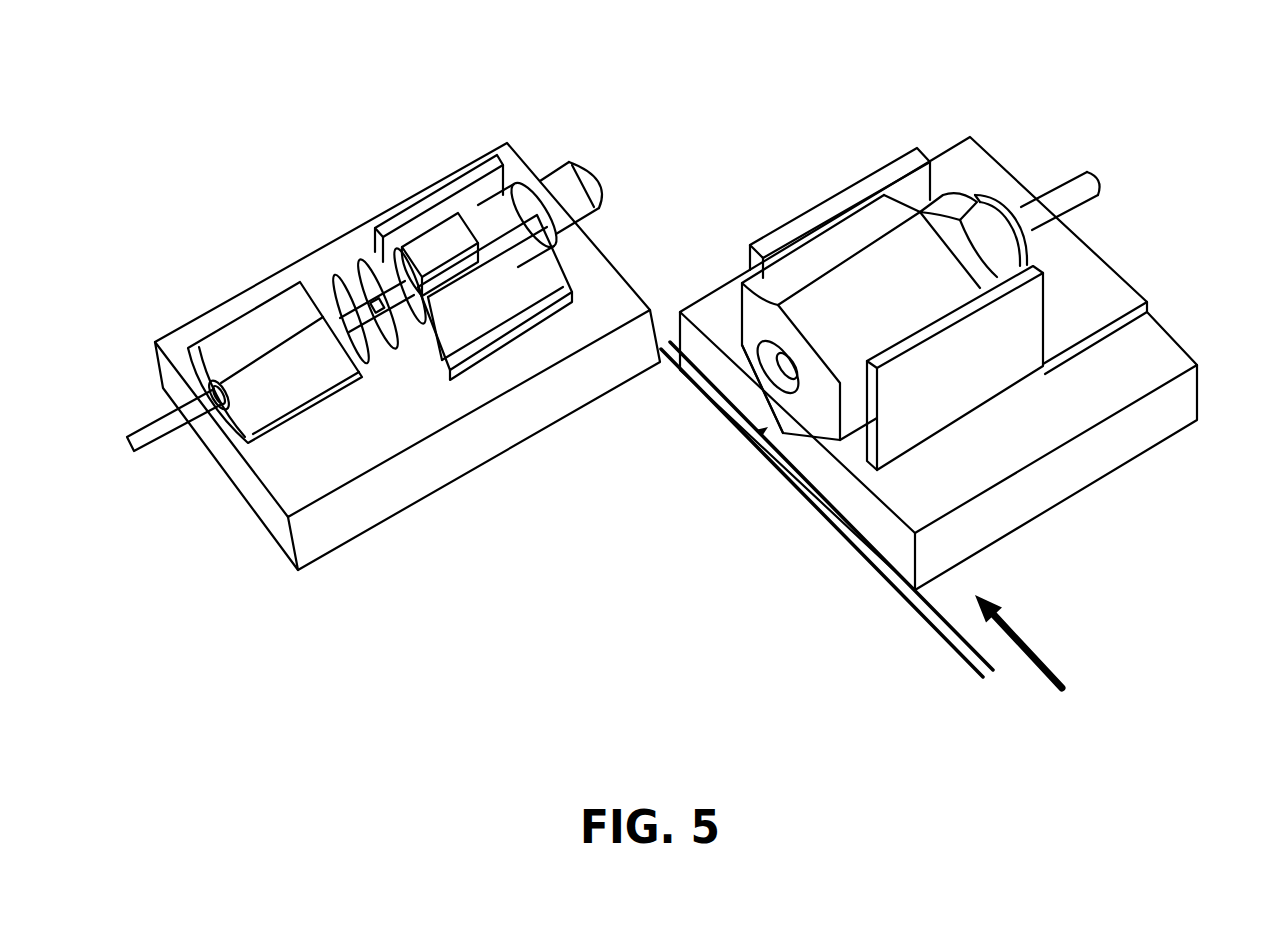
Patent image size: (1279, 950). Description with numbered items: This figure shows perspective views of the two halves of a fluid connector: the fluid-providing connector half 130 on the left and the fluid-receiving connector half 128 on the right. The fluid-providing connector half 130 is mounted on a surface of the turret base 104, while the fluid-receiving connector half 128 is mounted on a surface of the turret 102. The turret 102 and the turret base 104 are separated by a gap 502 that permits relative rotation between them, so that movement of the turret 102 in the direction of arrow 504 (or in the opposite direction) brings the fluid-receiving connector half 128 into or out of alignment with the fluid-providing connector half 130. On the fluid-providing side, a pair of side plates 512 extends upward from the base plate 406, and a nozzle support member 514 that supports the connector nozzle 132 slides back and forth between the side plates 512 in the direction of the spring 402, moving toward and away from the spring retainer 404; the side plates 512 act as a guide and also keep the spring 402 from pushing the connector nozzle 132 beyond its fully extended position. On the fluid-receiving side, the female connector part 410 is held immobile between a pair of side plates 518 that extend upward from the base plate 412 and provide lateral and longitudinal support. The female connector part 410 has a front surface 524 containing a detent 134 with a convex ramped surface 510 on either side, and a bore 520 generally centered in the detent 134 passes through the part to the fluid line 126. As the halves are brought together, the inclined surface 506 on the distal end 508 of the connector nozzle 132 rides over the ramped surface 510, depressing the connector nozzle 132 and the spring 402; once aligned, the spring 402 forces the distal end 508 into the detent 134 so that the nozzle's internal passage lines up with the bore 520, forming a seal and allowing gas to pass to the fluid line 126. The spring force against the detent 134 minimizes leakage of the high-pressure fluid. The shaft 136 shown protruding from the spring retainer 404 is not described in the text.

The turret 102 is at (1063, 595).
The turret base 104 is at (688, 593).
The fluid line 126 is at (1085, 177).
The fluid-receiving connector half 128 is at (951, 323).
The fluid-providing connector half 130 is at (372, 353).
The connector nozzle 132 is at (521, 183).
The detent 134 is at (726, 393).
The motor shaft 136 is at (150, 416).
The spring 402 is at (353, 264).
The spring retainer 404 is at (262, 341).
The base plate 406 is at (407, 374).
The female connector part 410 is at (837, 297).
The base plate 412 is at (968, 363).
The gap 502 is at (810, 506).
The arrow 504 is at (1039, 641).
The inclined surface 506 is at (603, 198).
The distal end 508 is at (572, 183).
The ramped surface 510 is at (810, 506).
The side plates 512 is at (460, 278).
The nozzle support member 514 is at (408, 227).
The side plates 518 is at (949, 315).
The bore 520 is at (719, 455).
The front surface 524 is at (730, 442).